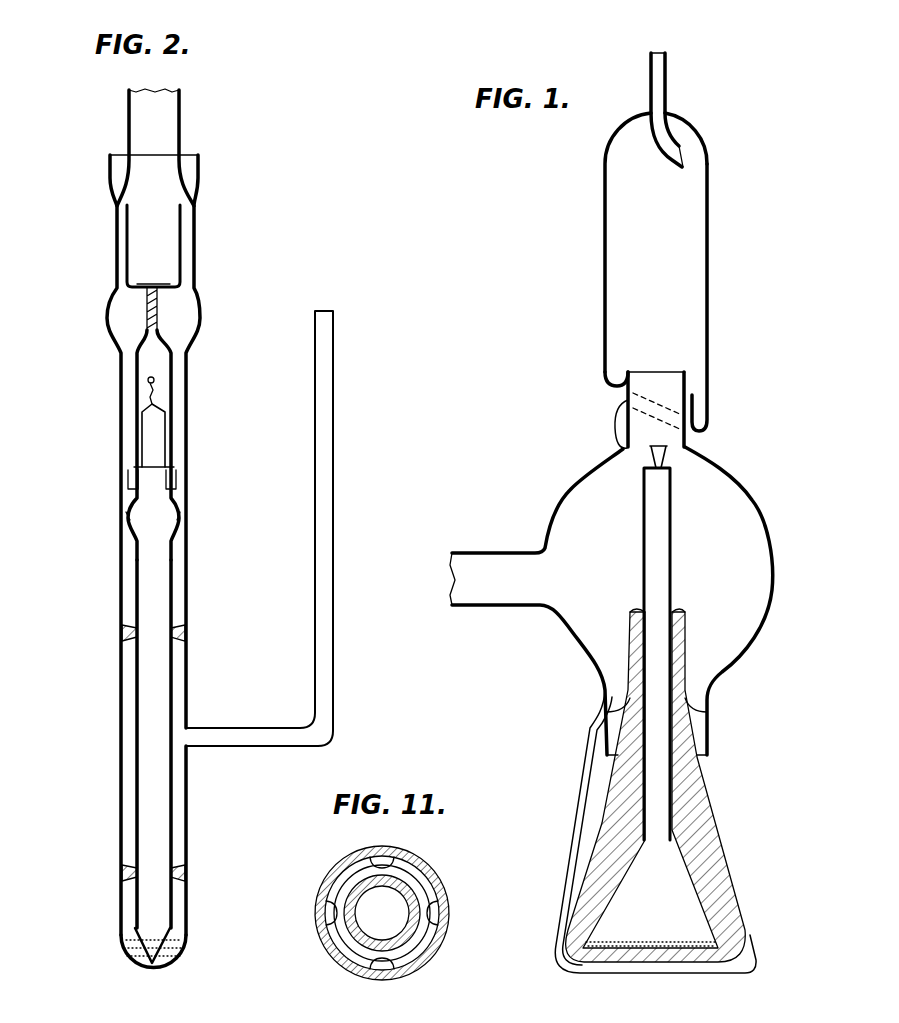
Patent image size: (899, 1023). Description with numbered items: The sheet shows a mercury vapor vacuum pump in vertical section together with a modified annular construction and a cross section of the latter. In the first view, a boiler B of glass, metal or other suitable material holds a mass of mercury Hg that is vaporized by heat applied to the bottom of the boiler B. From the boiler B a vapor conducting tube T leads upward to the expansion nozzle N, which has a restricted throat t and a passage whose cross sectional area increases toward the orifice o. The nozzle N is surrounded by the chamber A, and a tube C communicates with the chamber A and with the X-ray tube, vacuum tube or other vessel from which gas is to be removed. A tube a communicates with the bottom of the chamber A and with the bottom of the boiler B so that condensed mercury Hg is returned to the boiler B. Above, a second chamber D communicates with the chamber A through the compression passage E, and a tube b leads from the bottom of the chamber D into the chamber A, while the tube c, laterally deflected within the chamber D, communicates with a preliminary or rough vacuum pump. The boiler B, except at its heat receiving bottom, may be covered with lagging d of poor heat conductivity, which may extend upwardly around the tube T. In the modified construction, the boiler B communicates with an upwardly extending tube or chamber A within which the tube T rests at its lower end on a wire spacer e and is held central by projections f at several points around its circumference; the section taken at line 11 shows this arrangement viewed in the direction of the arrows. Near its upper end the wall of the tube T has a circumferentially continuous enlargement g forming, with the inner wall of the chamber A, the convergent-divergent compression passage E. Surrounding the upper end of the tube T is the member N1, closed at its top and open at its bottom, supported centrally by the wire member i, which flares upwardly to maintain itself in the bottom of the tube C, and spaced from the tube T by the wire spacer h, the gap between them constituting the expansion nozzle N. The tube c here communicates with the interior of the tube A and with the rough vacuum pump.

In FIG. 2, the chamber A is at (189, 556).
In FIG. 1, the chamber A is at (566, 497).
In FIG. 11, the chamber A is at (437, 958).
In FIG. 2, the tube C is at (182, 108).
In FIG. 1, the tube C is at (483, 550).
In FIG. 2, the supporting member i is at (181, 254).
In FIG. 2, the compression passage E is at (177, 518).
In FIG. 1, the compression passage E is at (627, 392).
In FIG. 2, the vapor conducting tube T is at (172, 660).
In FIG. 1, the vapor conducting tube T is at (684, 658).
In FIG. 11, the vapor conducting tube T is at (345, 962).
In FIG. 2, the circumferentially continuous enlargement g is at (126, 516).
In FIG. 2, the wire spacer h is at (148, 408).
In FIG. 2, the member N1 is at (168, 432).
In FIG. 2, the expansion nozzle N is at (174, 472).
In FIG. 1, the expansion nozzle N is at (667, 456).
In FIG. 2, the section line 11 is at (210, 565).
In FIG. 2, the projections f is at (176, 632).
In FIG. 11, the projections f is at (383, 857).
In FIG. 2, the tube c is at (245, 725).
In FIG. 1, the tube c is at (648, 60).
In FIG. 2, the boiler B is at (185, 946).
In FIG. 1, the boiler B is at (700, 880).
In FIG. 2, the wire spacer e is at (140, 950).
In FIG. 2, the mercury Hg is at (183, 955).
In FIG. 1, the mercury Hg is at (715, 945).
In FIG. 1, the second chamber D is at (604, 255).
In FIG. 1, the tube b is at (615, 426).
In FIG. 1, the orifice o is at (655, 440).
In FIG. 1, the restricted throat t is at (652, 470).
In FIG. 1, the lagging d is at (686, 632).
In FIG. 1, the tube a is at (572, 814).